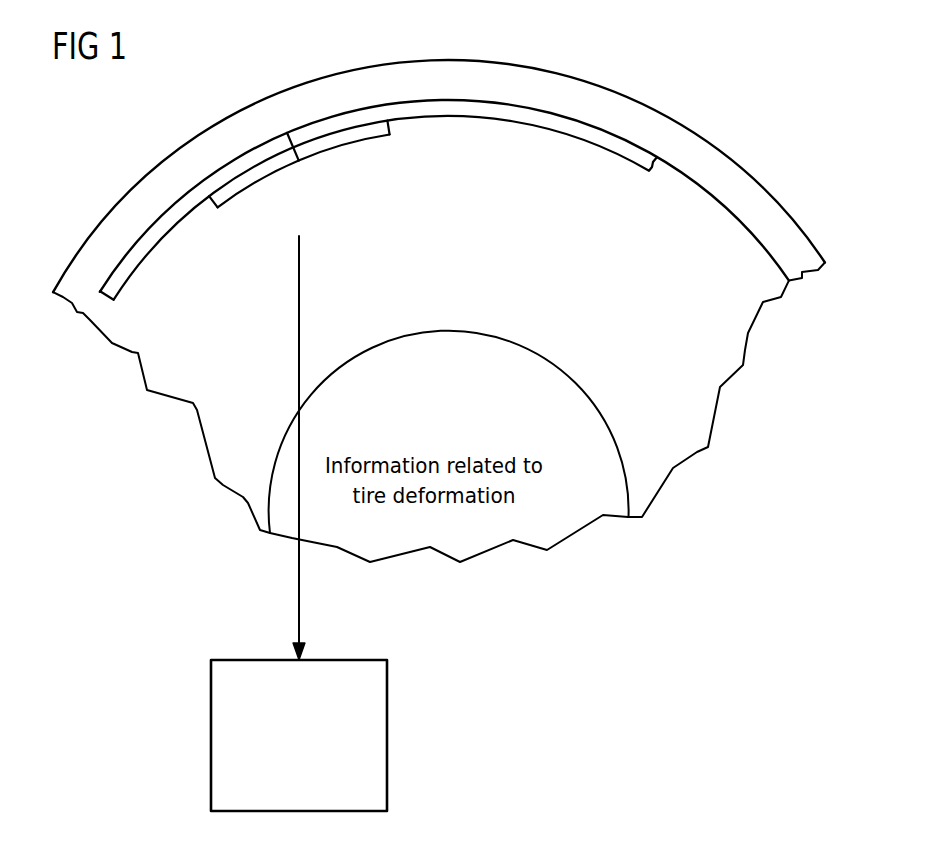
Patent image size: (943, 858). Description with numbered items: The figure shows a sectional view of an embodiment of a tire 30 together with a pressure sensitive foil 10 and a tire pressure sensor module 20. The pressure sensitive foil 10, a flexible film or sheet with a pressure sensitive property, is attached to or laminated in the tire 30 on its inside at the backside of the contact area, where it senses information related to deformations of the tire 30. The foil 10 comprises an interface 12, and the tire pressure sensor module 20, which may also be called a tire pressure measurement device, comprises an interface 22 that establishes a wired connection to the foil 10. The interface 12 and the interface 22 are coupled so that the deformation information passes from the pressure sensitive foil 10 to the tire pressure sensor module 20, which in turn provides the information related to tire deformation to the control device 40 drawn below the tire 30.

The pressure sensitive foil 10 is at (505, 116).
The interface 12 is at (357, 136).
The tire pressure sensor module 20 is at (108, 301).
The interface 22 is at (258, 178).
The tire 30 is at (717, 163).
The control device 40 is at (388, 737).